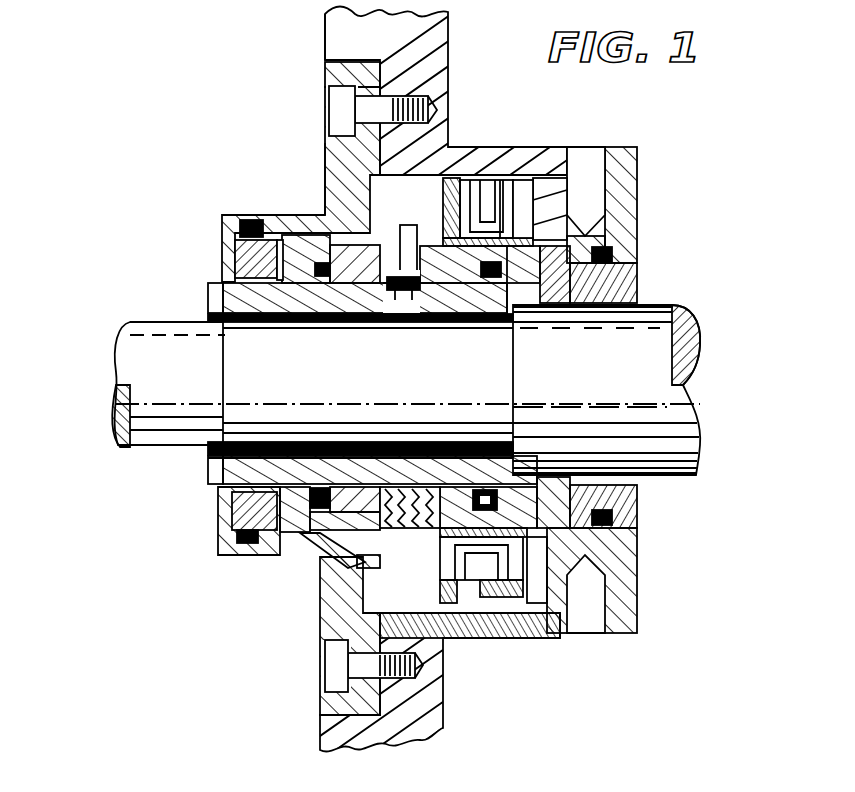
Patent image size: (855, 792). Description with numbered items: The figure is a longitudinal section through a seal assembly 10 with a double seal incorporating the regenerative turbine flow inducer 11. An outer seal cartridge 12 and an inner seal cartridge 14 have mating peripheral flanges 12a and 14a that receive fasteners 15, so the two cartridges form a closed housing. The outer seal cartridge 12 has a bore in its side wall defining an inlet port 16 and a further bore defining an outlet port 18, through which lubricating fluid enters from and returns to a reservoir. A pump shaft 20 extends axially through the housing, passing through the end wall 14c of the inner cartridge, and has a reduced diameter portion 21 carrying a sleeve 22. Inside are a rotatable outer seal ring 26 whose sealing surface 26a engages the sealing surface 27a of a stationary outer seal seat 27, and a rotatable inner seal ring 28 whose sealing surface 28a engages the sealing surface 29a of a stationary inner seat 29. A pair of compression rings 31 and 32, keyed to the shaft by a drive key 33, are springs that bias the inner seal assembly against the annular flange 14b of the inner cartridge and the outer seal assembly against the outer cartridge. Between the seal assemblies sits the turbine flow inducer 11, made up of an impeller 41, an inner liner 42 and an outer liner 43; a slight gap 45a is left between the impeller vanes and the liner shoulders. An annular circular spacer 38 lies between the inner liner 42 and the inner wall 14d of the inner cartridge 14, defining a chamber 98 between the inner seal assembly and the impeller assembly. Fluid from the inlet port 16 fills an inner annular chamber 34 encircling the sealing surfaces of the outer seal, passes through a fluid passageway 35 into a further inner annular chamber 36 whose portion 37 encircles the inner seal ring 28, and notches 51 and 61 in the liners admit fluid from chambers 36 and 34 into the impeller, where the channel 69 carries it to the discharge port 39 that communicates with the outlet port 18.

The seal assembly 10 is at (145, 567).
The turbine flow inducer 11 is at (500, 178).
The outer seal cartridge 12 is at (565, 148).
The peripheral flange 12a is at (327, 16).
The inner seal cartridge 14 is at (272, 213).
The peripheral flange 14a is at (325, 72).
The annular flange 14b is at (218, 475).
The end wall 14c is at (218, 522).
The inner wall 14d is at (325, 195).
The fasteners 15 is at (329, 110).
The inlet port 16 is at (585, 615).
The outlet port 18 is at (602, 173).
The shaft 20 is at (688, 338).
The reduced diameter portion 21 is at (323, 396).
The sleeve 22 is at (208, 290).
The rotatable outer seal ring 26 is at (500, 290).
The sealing surface 26a is at (582, 262).
The stationary outer seal seat 27 is at (640, 272).
The sealing surface 27a is at (628, 235).
The rotatable inner seal ring 28 is at (325, 247).
The sealing surface 28a is at (258, 245).
The stationary inner seat 29 is at (220, 262).
The sealing surface 29a is at (292, 265).
The compression ring 31 is at (395, 255).
The compression ring 32 is at (415, 240).
The drive key 33 is at (390, 282).
The inner annular chamber 34 is at (528, 605).
The fluid passageway 35 is at (500, 620).
The inner annular chamber 36 is at (330, 580).
The portion 37 is at (305, 535).
The annular circular spacer 38 is at (465, 147).
The discharge port 39 is at (560, 200).
The impeller 41 is at (528, 180).
The inner liner 42 is at (462, 180).
The outer liner 43 is at (612, 147).
The gap 45a is at (507, 178).
The notch 51 is at (440, 615).
The notch 61 is at (600, 583).
The fluid passageway 69 is at (505, 560).
The chamber 98 is at (414, 566).